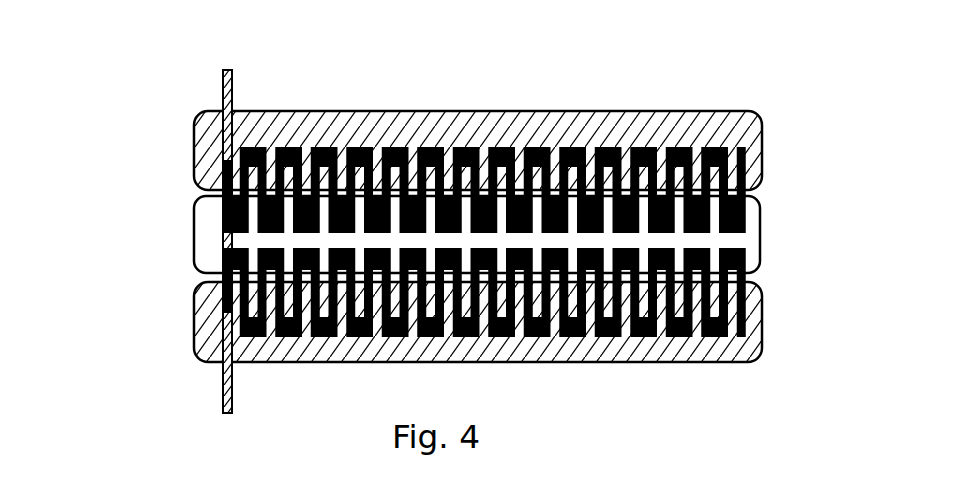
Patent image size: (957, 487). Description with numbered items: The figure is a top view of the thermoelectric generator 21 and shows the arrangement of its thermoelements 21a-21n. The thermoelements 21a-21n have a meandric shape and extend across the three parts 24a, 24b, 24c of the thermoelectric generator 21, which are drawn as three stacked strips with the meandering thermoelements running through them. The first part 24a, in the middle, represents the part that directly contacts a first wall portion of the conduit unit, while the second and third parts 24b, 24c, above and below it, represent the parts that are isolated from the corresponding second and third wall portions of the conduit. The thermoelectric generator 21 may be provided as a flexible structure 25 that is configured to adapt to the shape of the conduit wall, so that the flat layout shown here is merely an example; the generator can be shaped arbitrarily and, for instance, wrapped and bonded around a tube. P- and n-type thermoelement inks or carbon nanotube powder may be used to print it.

The thermoelectric generator 21 is at (175, 57).
The thermoelements 21a-21n is at (695, 125).
The first part 24a is at (177, 273).
The second part 24b is at (177, 187).
The third part 24c is at (177, 362).
The flexible structure 25 is at (785, 210).